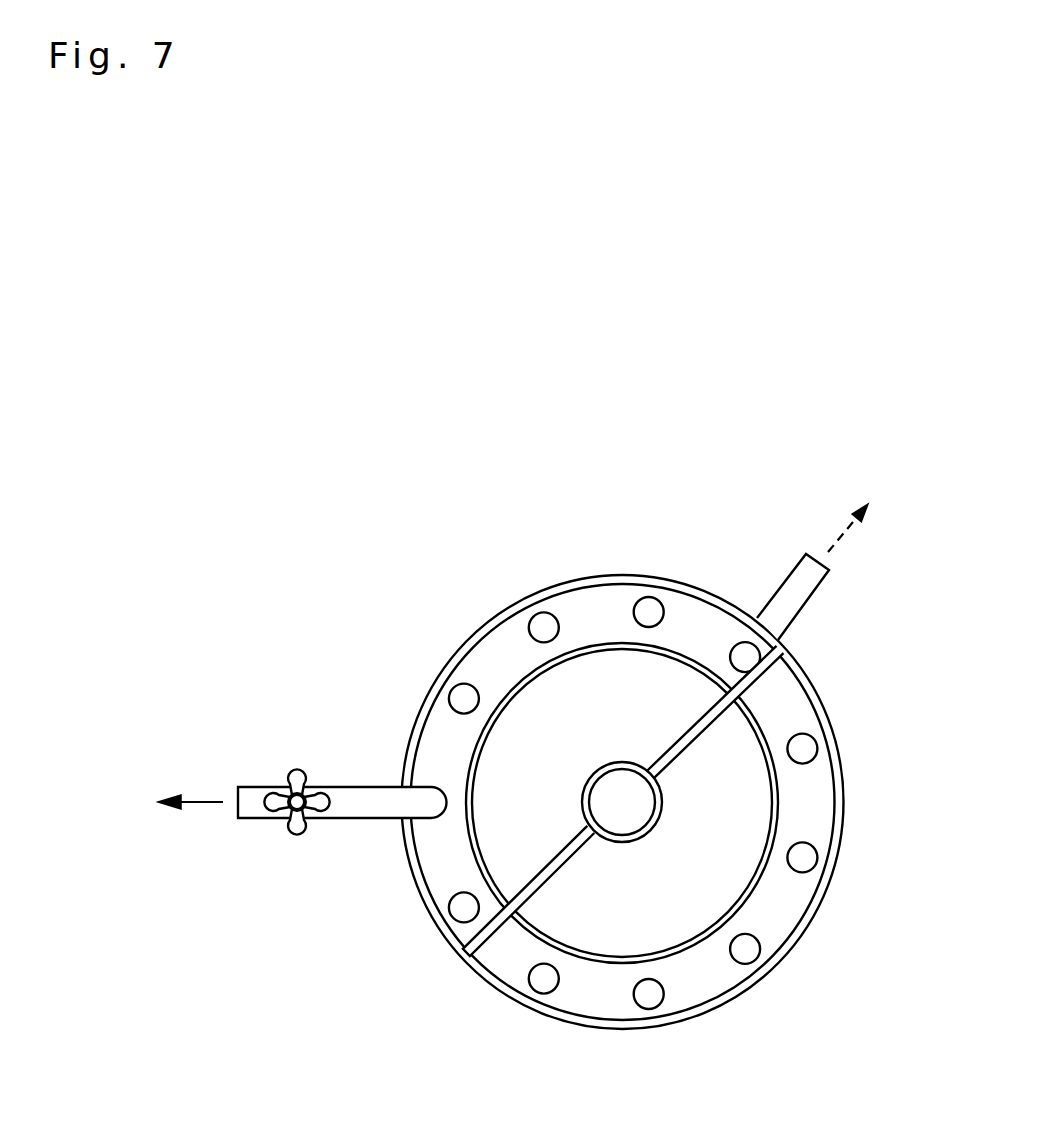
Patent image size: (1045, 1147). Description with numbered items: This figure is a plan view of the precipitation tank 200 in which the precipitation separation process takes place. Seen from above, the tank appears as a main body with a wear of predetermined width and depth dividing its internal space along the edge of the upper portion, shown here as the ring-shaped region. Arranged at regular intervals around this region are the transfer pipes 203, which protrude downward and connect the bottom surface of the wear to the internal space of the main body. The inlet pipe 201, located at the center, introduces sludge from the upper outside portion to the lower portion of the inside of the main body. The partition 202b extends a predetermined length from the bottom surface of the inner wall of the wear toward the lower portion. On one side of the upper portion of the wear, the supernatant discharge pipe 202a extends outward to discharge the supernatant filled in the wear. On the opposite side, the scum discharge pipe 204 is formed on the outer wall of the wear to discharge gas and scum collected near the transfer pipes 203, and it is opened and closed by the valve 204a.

The precipitation tank 200 is at (410, 495).
The inlet pipe 201 is at (634, 798).
The supernatant discharge pipe 202a is at (800, 597).
The partition 202b is at (745, 898).
The transfer pipes 203 is at (540, 980).
The scum discharge pipe 204 is at (352, 805).
The valve 204a is at (297, 768).